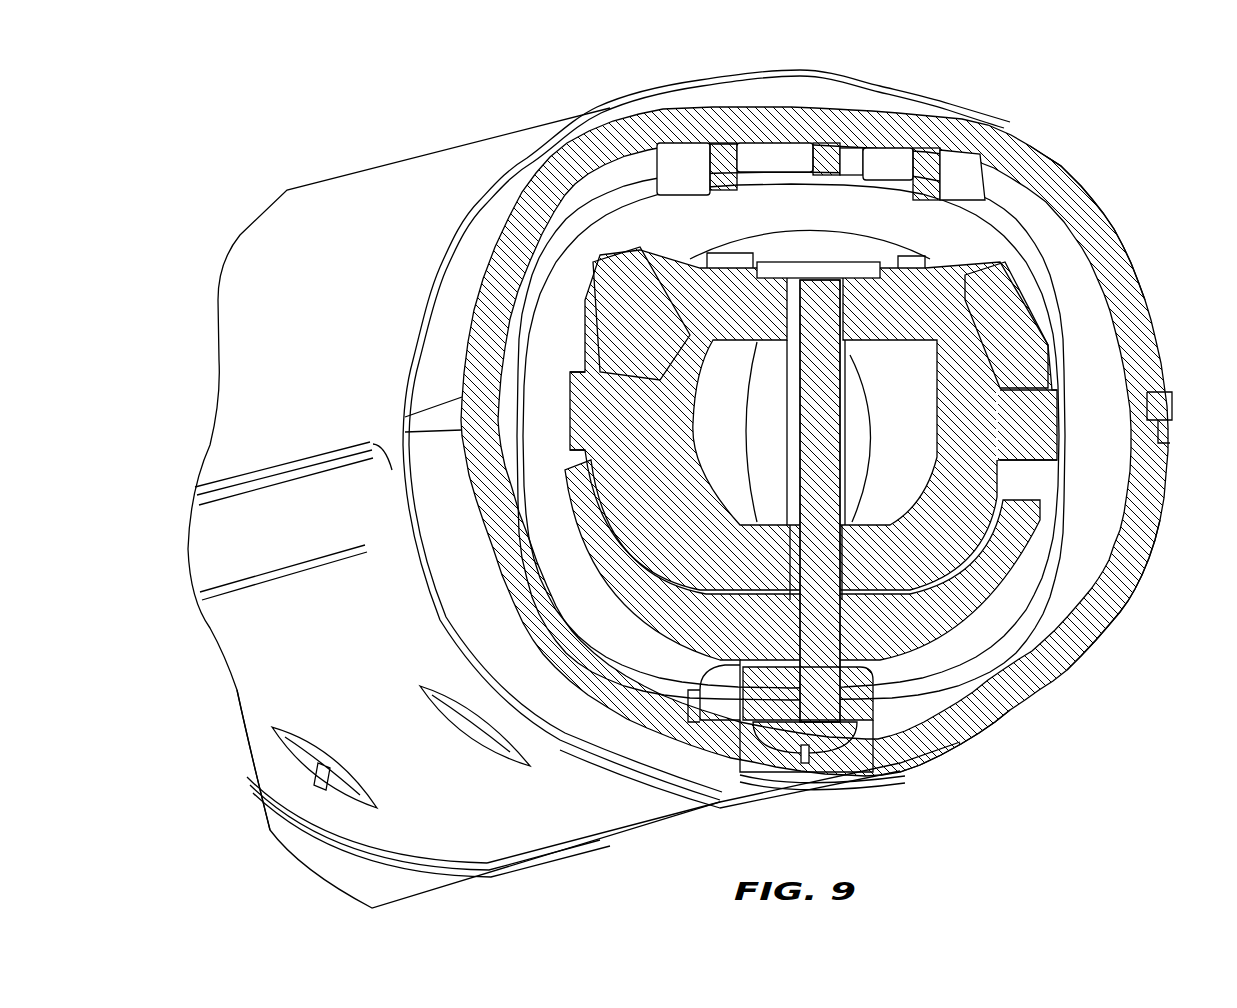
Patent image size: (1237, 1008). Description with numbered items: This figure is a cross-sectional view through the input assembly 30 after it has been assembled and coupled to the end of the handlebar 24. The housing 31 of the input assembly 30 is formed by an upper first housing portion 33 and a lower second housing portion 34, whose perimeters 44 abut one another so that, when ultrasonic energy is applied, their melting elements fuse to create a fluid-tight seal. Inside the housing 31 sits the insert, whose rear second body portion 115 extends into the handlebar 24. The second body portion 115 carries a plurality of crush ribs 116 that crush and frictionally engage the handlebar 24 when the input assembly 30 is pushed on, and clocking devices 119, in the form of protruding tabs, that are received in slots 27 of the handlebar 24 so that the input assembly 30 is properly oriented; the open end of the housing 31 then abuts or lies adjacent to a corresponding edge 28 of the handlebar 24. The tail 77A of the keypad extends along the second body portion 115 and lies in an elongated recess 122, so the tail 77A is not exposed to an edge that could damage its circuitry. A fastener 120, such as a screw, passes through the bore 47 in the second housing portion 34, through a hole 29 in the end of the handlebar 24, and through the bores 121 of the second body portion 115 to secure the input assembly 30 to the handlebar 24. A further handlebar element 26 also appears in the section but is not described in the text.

The handlebar 24 is at (400, 195).
The lower housing portion 26 is at (300, 645).
The slots 27 is at (572, 400).
The edge 28 is at (527, 158).
The hole 29 is at (780, 640).
The input assembly 30 is at (1050, 105).
The housing 31 is at (1107, 203).
The first housing portion 33 is at (1140, 300).
The second housing portion 34 is at (1097, 620).
The perimeters 44 is at (1163, 443).
The bore 47 is at (962, 735).
The tail 77A is at (838, 262).
The second body portion 115 is at (948, 348).
The crush ribs 116 is at (1057, 652).
The clocking devices 119 is at (1030, 440).
The fastener 120 is at (832, 770).
The bores 121 is at (850, 297).
The elongated recess 122 is at (785, 243).